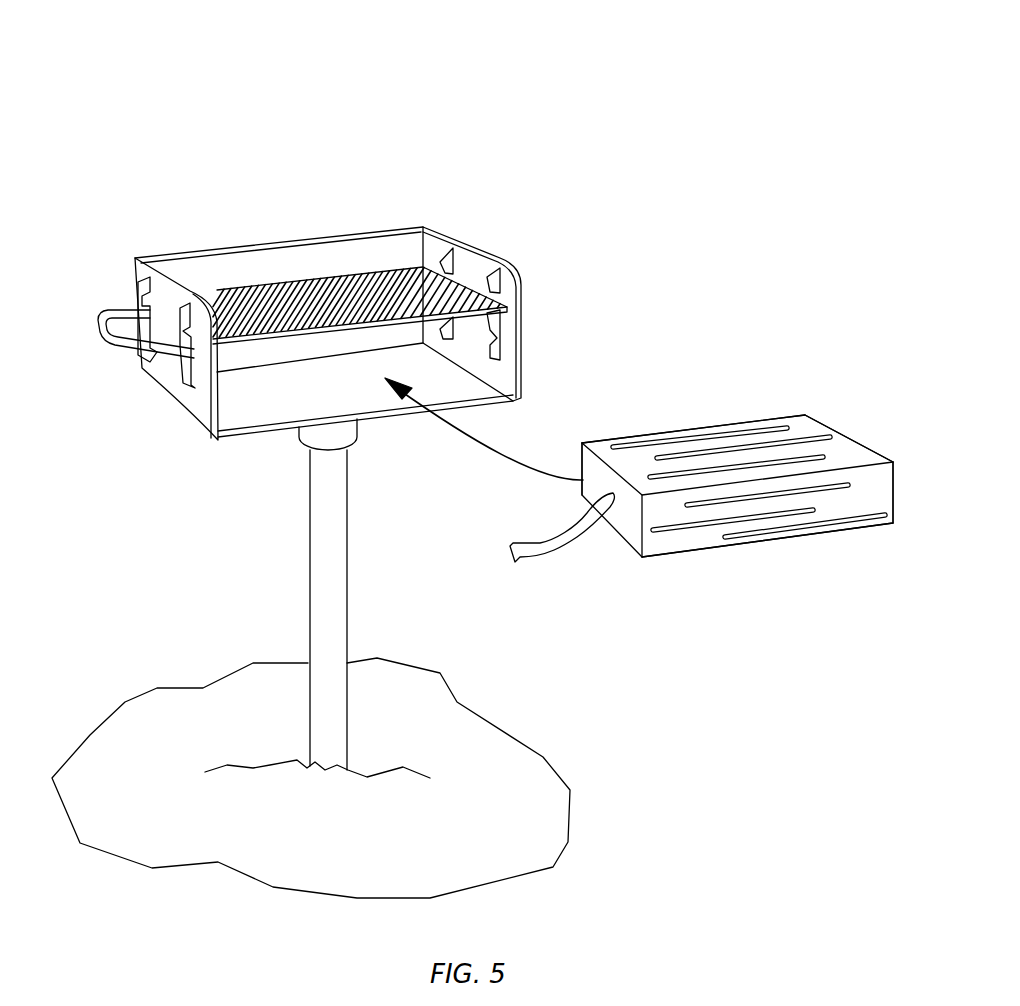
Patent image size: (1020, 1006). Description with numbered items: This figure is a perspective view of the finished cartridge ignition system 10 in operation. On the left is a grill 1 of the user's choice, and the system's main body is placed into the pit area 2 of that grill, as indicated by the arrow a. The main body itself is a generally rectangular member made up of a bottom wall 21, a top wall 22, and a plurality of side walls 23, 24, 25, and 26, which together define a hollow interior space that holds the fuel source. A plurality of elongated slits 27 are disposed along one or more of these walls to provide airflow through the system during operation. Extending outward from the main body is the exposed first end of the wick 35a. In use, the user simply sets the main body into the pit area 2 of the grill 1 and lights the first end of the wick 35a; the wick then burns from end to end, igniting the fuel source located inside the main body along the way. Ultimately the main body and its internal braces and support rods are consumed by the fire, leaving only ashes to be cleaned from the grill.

The finished system 10 is at (240, 88).
The grill 1 is at (186, 239).
The pit area 2 is at (245, 433).
The arrow a is at (483, 462).
The bottom wall 21 is at (690, 556).
The top wall 22 is at (800, 428).
The side wall 23 is at (835, 508).
The side wall 24 is at (705, 427).
The side wall 25 is at (582, 463).
The side wall 26 is at (838, 433).
The elongated slits 27 is at (765, 447).
The first end of the wick 35a is at (522, 553).